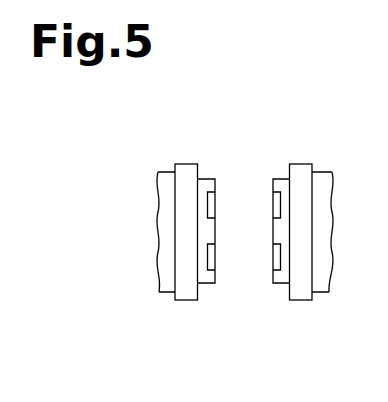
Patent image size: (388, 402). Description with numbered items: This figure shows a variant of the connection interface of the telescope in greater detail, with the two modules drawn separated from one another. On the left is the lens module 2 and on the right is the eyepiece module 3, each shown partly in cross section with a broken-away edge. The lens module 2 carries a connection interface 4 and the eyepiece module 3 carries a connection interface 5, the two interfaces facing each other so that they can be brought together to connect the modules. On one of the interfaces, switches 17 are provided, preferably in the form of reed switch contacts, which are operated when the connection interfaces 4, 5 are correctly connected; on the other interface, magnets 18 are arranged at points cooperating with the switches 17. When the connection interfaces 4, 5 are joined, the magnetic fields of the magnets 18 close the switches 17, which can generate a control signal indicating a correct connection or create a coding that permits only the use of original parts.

The lens module 2 is at (168, 175).
The eyepiece module 3 is at (319, 176).
The connection interface 4 is at (217, 179).
The connection interface 5 is at (270, 179).
The switch 17 is at (211, 256).
The magnet 18 is at (274, 257).